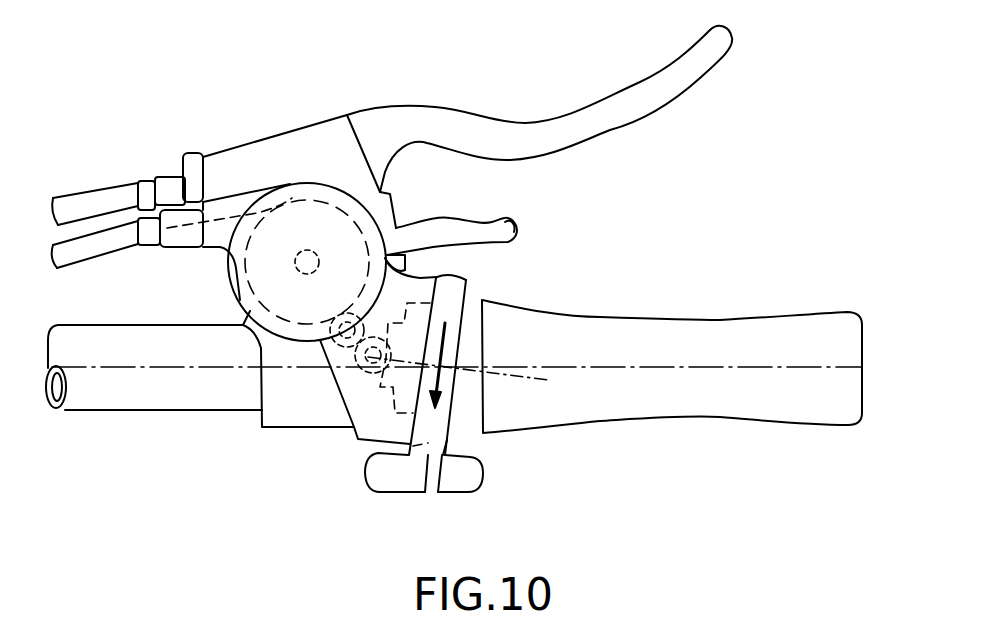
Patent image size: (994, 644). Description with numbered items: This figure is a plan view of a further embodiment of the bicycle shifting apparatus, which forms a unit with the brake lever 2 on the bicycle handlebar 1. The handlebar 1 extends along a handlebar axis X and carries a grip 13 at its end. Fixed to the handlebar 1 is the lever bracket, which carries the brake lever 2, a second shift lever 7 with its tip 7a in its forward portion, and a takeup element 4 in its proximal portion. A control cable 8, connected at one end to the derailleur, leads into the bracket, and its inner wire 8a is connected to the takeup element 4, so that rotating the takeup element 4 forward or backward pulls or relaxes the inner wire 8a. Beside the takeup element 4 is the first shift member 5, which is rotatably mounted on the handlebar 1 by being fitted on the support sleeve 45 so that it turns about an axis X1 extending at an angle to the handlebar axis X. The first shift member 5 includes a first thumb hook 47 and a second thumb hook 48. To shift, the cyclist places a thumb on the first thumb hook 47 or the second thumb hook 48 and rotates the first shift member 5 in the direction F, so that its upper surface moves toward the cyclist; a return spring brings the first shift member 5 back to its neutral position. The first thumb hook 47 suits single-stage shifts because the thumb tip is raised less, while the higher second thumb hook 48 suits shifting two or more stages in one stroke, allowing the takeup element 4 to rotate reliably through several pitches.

The bicycle handlebar 1 is at (100, 398).
The brake lever 2 is at (583, 105).
The takeup element 4 is at (252, 272).
The first shift member 5 is at (458, 277).
The second shift lever 7 is at (437, 222).
The release lever tip 7a is at (517, 227).
The control cable 8 is at (85, 233).
The inner wire 8a is at (190, 226).
The handlebar grip 13 is at (678, 320).
The support sleeve 45 is at (473, 430).
The first thumb hook 47 is at (460, 485).
The second thumb hook 48 is at (390, 485).
The direction of rotation F is at (448, 342).
The handlebar axis X is at (780, 370).
The rotation axis of first shift member X1 is at (530, 381).